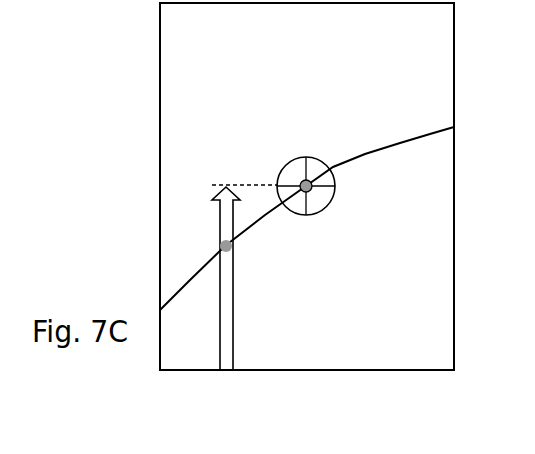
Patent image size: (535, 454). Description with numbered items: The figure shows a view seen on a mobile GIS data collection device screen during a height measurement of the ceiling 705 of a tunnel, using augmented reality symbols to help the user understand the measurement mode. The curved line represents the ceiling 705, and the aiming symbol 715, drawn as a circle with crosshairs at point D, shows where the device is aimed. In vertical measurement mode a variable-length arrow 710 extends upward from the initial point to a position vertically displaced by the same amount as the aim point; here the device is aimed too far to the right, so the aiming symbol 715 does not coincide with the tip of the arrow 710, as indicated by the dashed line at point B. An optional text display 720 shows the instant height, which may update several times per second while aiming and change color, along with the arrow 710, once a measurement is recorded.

The ceiling 705 is at (402, 146).
The variable-length arrow 710 is at (233, 343).
The aiming symbol 715 is at (322, 159).
The text display 720 is at (393, 325).